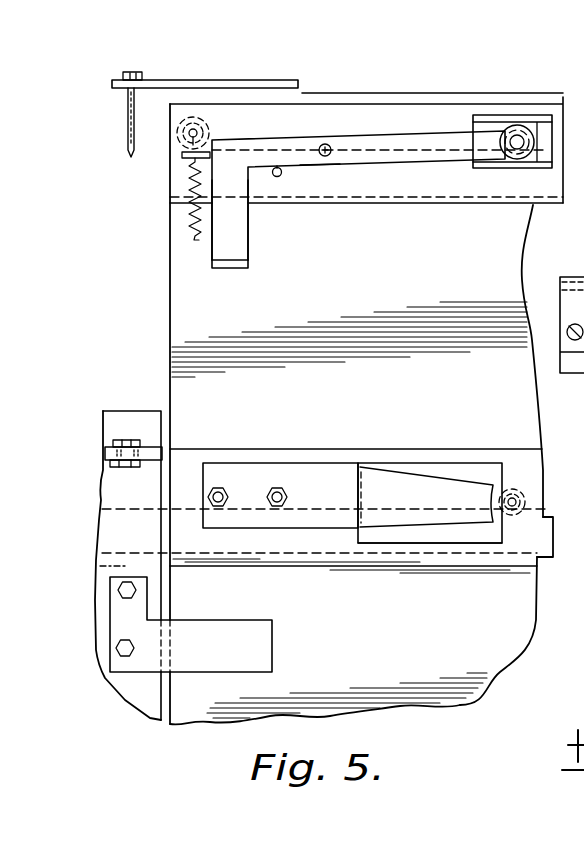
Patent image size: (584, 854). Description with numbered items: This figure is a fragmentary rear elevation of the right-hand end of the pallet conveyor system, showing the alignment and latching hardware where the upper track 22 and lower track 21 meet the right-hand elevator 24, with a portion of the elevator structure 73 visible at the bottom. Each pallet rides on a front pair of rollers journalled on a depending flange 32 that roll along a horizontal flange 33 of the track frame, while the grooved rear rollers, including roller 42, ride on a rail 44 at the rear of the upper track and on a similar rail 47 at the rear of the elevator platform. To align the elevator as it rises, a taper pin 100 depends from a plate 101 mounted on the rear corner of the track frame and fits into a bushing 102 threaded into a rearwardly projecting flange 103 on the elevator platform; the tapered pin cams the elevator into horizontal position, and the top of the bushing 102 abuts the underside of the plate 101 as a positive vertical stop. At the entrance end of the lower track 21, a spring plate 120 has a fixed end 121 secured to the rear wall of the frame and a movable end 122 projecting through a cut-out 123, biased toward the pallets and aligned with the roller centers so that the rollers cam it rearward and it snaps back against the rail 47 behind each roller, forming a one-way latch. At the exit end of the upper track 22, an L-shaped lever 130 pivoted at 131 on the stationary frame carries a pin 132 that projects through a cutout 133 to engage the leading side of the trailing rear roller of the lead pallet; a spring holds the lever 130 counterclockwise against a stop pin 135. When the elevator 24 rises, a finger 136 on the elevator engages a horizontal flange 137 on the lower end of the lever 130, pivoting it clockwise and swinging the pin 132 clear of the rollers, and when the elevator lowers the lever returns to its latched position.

The lower track 21 is at (401, 572).
The upper track 22 is at (470, 205).
The right-hand elevator 24 is at (139, 712).
The depending flange 32 is at (578, 572).
The horizontal flange 33 is at (582, 250).
The rear roller 42 is at (213, 128).
The rail 44 is at (392, 150).
The rail 47 is at (552, 520).
The base plate 73 is at (457, 698).
The taper pin 100 is at (130, 156).
The plate 101 is at (240, 84).
The bushing 102 is at (130, 440).
The rearwardly projecting flange 103 is at (152, 452).
The spring plate 120 is at (343, 465).
The fixed end 121 is at (258, 473).
The movable end 122 is at (443, 477).
The cut-out 123 is at (420, 540).
The L-shaped lever 130 is at (425, 162).
The pivot 131 is at (322, 176).
The pin 132 is at (508, 100).
The cutout 133 is at (483, 117).
The stop pin 135 is at (280, 178).
The finger 136 is at (247, 626).
The horizontal flange 137 is at (238, 268).